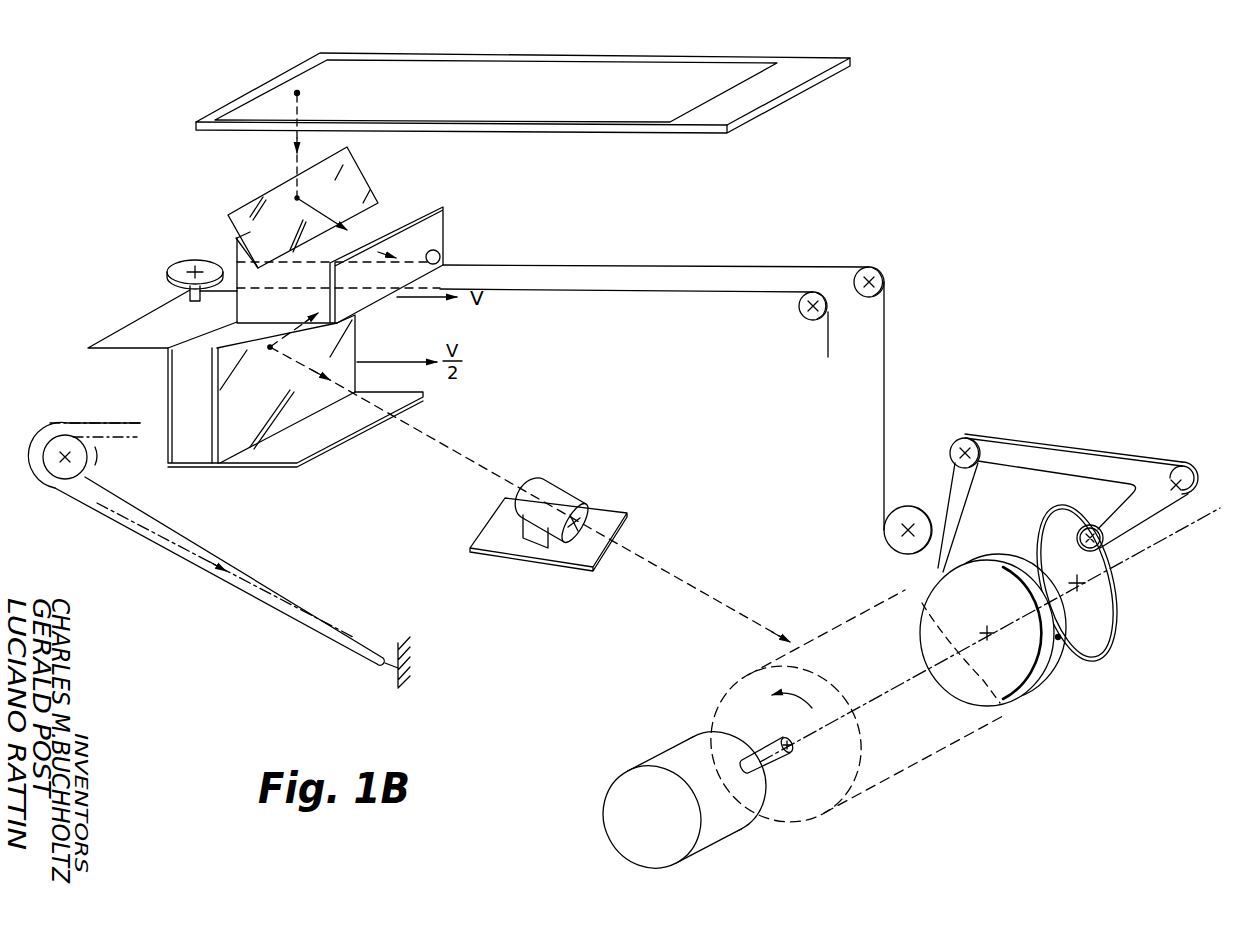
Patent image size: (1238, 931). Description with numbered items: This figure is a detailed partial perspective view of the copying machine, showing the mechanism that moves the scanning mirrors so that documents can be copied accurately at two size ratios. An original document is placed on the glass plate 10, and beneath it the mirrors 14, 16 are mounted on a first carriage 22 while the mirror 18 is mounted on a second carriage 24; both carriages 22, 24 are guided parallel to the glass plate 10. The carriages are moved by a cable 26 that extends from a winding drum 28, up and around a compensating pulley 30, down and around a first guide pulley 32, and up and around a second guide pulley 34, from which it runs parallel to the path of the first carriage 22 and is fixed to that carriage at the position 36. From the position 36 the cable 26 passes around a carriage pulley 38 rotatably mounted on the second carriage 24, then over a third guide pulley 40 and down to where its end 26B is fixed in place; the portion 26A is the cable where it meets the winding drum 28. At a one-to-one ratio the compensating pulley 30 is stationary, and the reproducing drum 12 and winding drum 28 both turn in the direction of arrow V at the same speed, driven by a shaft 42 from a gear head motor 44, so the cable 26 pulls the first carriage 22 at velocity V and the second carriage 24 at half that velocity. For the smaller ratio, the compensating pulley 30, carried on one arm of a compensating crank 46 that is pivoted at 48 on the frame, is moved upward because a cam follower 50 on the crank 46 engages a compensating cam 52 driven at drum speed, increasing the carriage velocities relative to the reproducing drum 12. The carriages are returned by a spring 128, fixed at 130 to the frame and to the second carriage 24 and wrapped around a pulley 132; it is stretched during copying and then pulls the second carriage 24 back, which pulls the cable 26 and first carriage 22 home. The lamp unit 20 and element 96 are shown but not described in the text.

The glass plate 10 is at (792, 57).
The reproducing drum 12 is at (832, 625).
The mirror 14 is at (363, 177).
The mirror 16 is at (427, 210).
The mirror 18 is at (350, 342).
The lamp / lens unit 20 is at (560, 490).
The first carriage 22 is at (233, 240).
The second carriage 24 is at (163, 392).
The cable 26 is at (642, 292).
The tape end wrapped on drum 26A is at (1060, 643).
The cable end 26B is at (828, 338).
The winding drum 28 is at (1018, 703).
The compensating pulley 30 is at (953, 440).
The first guide pulley 32 is at (888, 548).
The second guide pulley 34 is at (883, 265).
The position 36 is at (441, 248).
The carriage pulley 38 is at (192, 259).
The third guide pulley 40 is at (800, 312).
The shaft 42 is at (760, 748).
The gear head motor 44 is at (678, 738).
The compensating crank 46 is at (1060, 444).
The pivot 48 is at (1180, 469).
The cam follower 50 is at (1090, 525).
The compensating cam 52 is at (1110, 590).
The cable 96 is at (103, 431).
The spring 128 is at (248, 573).
The fixed point 130 is at (400, 652).
The pulley 132 is at (96, 466).